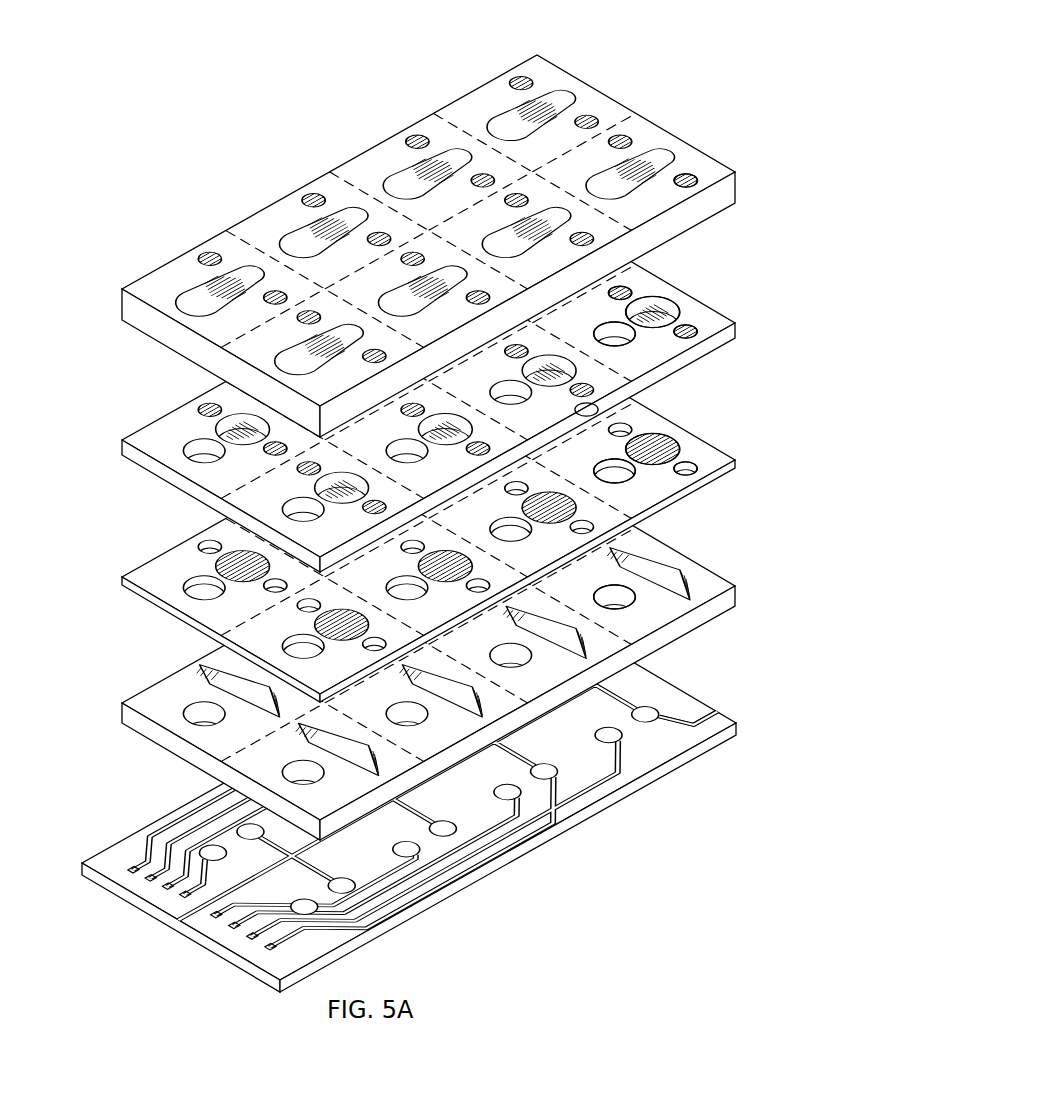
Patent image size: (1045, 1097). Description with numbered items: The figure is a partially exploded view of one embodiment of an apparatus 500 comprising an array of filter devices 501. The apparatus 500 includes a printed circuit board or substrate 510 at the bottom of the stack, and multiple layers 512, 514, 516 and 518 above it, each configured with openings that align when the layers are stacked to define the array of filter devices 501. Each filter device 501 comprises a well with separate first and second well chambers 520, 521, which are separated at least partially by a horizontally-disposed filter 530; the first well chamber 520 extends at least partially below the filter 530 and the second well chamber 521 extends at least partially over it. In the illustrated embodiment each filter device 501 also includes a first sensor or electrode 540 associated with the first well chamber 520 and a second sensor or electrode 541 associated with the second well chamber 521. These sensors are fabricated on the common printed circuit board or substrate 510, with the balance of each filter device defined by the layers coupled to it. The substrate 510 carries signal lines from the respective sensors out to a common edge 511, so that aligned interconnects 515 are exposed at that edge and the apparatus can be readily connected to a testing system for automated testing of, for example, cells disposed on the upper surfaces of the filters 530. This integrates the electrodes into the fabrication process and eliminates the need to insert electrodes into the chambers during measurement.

The apparatus 500 is at (417, 544).
The filter device 501 is at (417, 544).
The printed circuit board or substrate 510 is at (417, 825).
The common edge 511 is at (266, 983).
The layer 512 is at (153, 686).
The layer 514 is at (153, 561).
The aligned interconnects 515 is at (412, 795).
The layer 516 is at (153, 424).
The layer 518 is at (158, 270).
The first well chamber 520 is at (688, 170).
The second well chamber 521 is at (642, 181).
The horizontally-disposed filter 530 is at (660, 463).
The first sensor (or electrode) 540 is at (688, 713).
The second sensor (or electrode) 541 is at (608, 735).